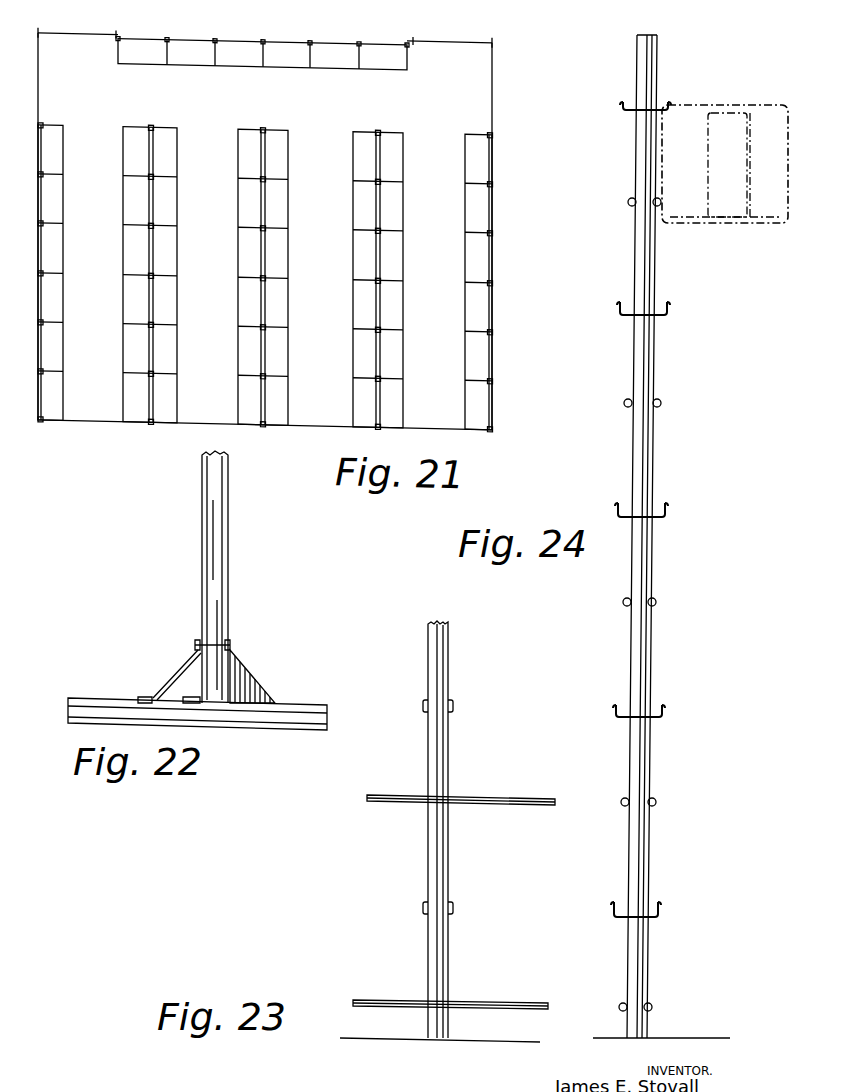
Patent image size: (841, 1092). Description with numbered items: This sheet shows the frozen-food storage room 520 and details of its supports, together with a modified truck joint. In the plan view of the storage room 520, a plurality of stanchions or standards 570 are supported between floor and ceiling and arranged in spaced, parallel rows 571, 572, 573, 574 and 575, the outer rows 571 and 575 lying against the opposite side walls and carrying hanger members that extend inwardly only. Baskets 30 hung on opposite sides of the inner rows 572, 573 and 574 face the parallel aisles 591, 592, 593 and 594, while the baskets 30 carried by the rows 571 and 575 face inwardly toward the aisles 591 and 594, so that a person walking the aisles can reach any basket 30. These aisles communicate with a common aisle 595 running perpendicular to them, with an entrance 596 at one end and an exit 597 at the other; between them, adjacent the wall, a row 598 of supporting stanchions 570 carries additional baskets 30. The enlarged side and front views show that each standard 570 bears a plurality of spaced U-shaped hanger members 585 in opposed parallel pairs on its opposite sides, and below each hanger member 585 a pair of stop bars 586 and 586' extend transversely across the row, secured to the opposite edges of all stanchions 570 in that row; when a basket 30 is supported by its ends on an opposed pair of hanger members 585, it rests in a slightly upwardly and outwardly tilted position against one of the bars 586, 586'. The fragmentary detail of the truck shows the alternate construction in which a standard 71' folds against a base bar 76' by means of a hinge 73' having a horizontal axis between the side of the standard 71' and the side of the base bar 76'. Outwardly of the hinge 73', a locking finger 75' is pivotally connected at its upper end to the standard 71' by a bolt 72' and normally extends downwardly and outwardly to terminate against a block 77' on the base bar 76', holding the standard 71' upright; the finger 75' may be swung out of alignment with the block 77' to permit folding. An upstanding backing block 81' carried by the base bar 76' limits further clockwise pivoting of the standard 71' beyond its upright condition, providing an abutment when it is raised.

In FIG. 21, the storage room 520 is at (492, 82).
In FIG. 21, the row of standards 571 is at (40, 420).
In FIG. 21, the row of standards 572 is at (147, 418).
In FIG. 21, the row of standards 573 is at (263, 418).
In FIG. 21, the row of standards 574 is at (378, 416).
In FIG. 21, the row of standards 575 is at (492, 395).
In FIG. 21, the aisle 591 is at (107, 131).
In FIG. 21, the aisle 592 is at (220, 132).
In FIG. 21, the aisle 593 is at (333, 136).
In FIG. 21, the aisle 594 is at (437, 133).
In FIG. 21, the common aisle 595 is at (48, 87).
In FIG. 21, the entrance 596 is at (86, 44).
In FIG. 21, the exit 597 is at (450, 31).
In FIG. 21, the row of supporting stanchions 598 is at (285, 35).
In FIG. 22, the standard 71' is at (236, 577).
In FIG. 22, the bolt 72' is at (234, 637).
In FIG. 22, the hinge 73' is at (176, 675).
In FIG. 22, the locking finger 75' is at (181, 670).
In FIG. 22, the base bar 76' is at (203, 704).
In FIG. 22, the block 77' is at (128, 689).
In FIG. 22, the backing block 81' is at (261, 676).
In FIG. 23, the hanger member 585 is at (425, 710).
In FIG. 24, the hanger member 585 is at (667, 305).
In FIG. 23, the stop bar 586 is at (454, 891).
In FIG. 24, the stop bar 586 is at (609, 604).
In FIG. 24, the stop bar 586' is at (675, 604).
In FIG. 24, the standard 570 is at (652, 558).
In FIG. 24, the basket 30 is at (703, 107).